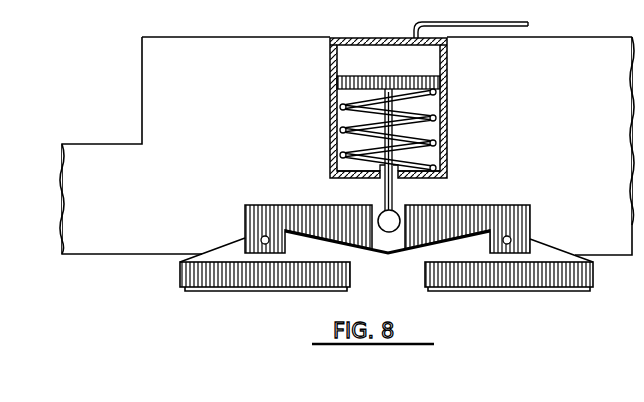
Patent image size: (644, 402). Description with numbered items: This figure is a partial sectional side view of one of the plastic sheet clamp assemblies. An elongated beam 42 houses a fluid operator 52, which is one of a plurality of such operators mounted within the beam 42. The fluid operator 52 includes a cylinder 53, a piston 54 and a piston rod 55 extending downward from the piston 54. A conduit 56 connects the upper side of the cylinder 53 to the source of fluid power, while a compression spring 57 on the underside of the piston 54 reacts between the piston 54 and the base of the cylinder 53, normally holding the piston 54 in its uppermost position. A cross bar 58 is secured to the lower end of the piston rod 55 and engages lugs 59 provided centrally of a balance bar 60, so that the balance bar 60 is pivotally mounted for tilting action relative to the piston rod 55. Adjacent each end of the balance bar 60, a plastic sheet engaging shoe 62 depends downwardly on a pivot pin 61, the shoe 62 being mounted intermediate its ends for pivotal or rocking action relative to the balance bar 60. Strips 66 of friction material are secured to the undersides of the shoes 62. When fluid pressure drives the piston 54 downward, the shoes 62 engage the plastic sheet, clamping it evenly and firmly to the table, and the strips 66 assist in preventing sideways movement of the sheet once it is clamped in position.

The elongated beam 42 is at (540, 122).
The fluid operator 52 is at (417, 117).
The cylinder 53 is at (332, 76).
The piston 54 is at (381, 80).
The piston rod 55 is at (387, 113).
The conduit 56 is at (493, 26).
The compression spring 57 is at (376, 149).
The cross bar 58 is at (382, 227).
The lug 59 is at (402, 220).
The balance bar 60 is at (483, 212).
The pivot pin 61 is at (262, 236).
The plastic sheet engaging shoe 62 is at (426, 272).
The friction strip 66 is at (347, 289).